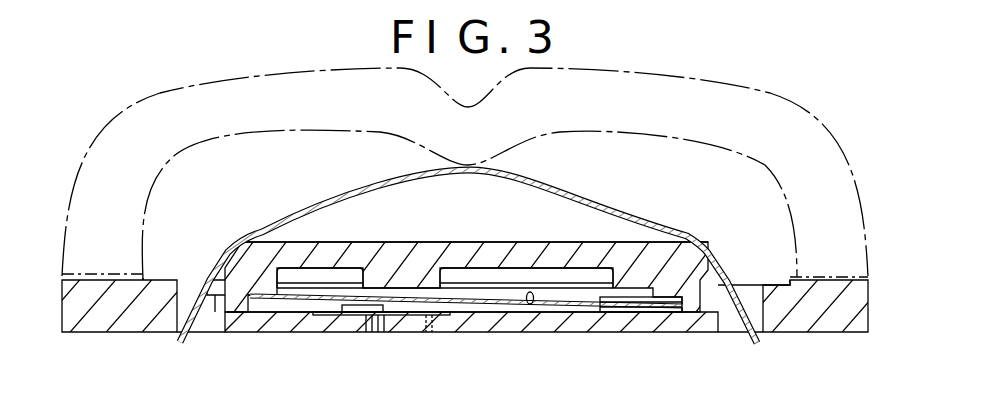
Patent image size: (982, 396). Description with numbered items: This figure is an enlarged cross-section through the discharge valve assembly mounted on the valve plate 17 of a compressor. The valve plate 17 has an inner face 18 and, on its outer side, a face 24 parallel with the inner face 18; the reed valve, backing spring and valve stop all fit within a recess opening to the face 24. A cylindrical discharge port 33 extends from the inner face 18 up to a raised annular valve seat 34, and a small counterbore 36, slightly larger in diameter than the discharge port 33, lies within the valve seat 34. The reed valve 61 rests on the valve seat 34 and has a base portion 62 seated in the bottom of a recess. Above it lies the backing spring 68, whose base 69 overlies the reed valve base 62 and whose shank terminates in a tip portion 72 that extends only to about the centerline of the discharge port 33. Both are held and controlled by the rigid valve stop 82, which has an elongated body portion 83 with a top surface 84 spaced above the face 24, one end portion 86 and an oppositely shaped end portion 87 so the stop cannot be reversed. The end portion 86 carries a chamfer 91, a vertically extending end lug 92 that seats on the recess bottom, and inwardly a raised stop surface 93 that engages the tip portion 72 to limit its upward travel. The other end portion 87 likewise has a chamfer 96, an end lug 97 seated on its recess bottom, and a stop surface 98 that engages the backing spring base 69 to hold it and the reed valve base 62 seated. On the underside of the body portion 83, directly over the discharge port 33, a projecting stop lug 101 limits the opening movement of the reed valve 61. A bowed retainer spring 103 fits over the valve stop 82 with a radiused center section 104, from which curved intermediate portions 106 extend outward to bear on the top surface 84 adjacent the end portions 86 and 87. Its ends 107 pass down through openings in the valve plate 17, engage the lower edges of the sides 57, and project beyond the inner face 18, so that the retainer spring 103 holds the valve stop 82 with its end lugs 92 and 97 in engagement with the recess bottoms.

The valve plate 17 is at (812, 317).
The inner face 18 is at (772, 337).
The outer face 24 is at (783, 280).
The outer sides of openings 57 is at (178, 298).
The valve stop end portion 86 is at (248, 265).
The top surface 84 is at (387, 253).
The body portion 83 is at (507, 250).
The valve stop end portion 87 is at (665, 268).
The valve stop 82 is at (453, 237).
The end lug 92 is at (233, 310).
The stop surface 93 is at (257, 298).
The stop lug 101 is at (435, 287).
The radiused center section 104 is at (450, 182).
The retainer spring 103 is at (527, 167).
The intermediate portions 106 is at (317, 208).
The chamfer 91 is at (240, 243).
The chamfer 96 is at (700, 250).
The spring ends 107 is at (178, 343).
The end lug 97 is at (713, 337).
The tip portion 72 is at (276, 302).
The valve seat 34 is at (352, 313).
The reed valve 61 is at (507, 310).
The counterbore 36 is at (376, 318).
The discharge port 33 is at (432, 320).
The backing spring 68 is at (530, 304).
The stop surface 98 is at (620, 312).
The reed valve base portion 62 is at (655, 312).
The backing spring base 69 is at (670, 310).